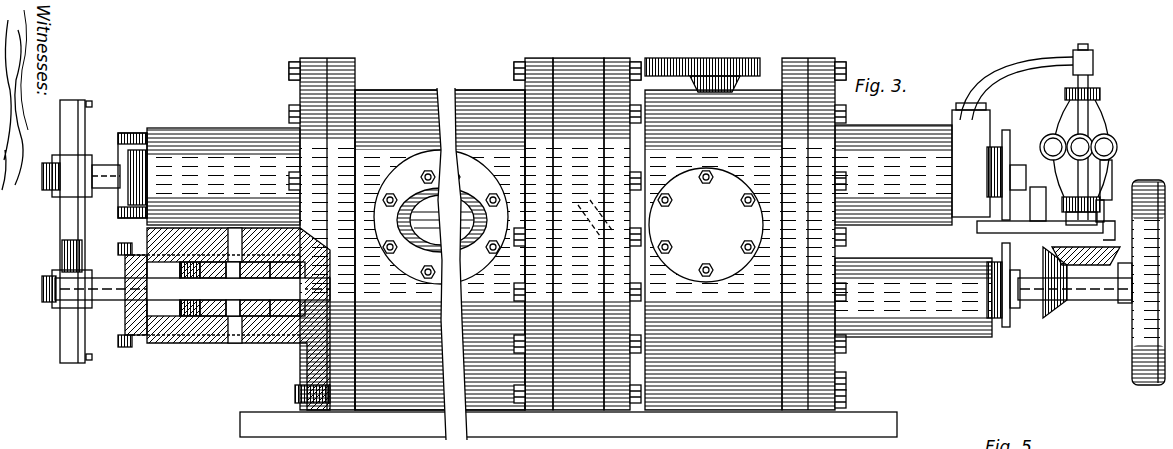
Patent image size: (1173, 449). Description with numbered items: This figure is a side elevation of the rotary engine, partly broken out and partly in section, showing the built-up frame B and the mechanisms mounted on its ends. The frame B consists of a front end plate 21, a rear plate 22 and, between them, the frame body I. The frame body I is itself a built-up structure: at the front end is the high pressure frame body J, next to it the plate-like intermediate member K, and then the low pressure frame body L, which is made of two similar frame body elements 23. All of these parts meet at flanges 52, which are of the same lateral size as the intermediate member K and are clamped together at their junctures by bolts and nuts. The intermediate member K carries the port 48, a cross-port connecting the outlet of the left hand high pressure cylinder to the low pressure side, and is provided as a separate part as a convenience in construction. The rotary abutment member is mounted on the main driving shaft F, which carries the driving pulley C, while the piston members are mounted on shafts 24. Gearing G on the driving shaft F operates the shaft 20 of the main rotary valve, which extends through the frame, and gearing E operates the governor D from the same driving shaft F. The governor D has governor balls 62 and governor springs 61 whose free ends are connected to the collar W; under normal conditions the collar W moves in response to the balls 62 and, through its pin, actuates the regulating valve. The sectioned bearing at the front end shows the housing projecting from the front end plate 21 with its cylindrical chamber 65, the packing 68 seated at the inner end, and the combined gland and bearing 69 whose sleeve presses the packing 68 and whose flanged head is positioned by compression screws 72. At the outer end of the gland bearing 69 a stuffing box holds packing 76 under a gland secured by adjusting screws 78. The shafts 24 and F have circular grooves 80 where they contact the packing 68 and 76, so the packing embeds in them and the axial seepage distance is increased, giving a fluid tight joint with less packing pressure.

The shaft of the main rotary valve 20 is at (108, 163).
The front end plate 21 is at (815, 58).
The rear plate 22 is at (322, 58).
The frame body elements 23 is at (390, 90).
The shafts 24 is at (1020, 302).
The port 48 is at (588, 236).
The flanges 52 is at (352, 57).
The governor springs 61 is at (1106, 172).
The governor balls 62 is at (1111, 147).
The cylindrical chamber 65 is at (243, 312).
The packing 68 is at (296, 285).
The combined gland and bearing 69 is at (218, 320).
The compression screws 72 is at (568, 430).
The packing 76 is at (205, 340).
The adjusting screws 78 is at (137, 330).
The circular grooves 80 is at (272, 300).
The frame B is at (632, 57).
The driving pulley C is at (1140, 185).
The governor D is at (1077, 134).
The gearing E is at (1056, 320).
The driving shaft F is at (108, 300).
The gearing G is at (62, 248).
The frame body I is at (527, 57).
The high pressure frame body J is at (713, 234).
The intermediate member K is at (586, 57).
The low pressure frame body L is at (415, 90).
The collar W is at (1110, 201).